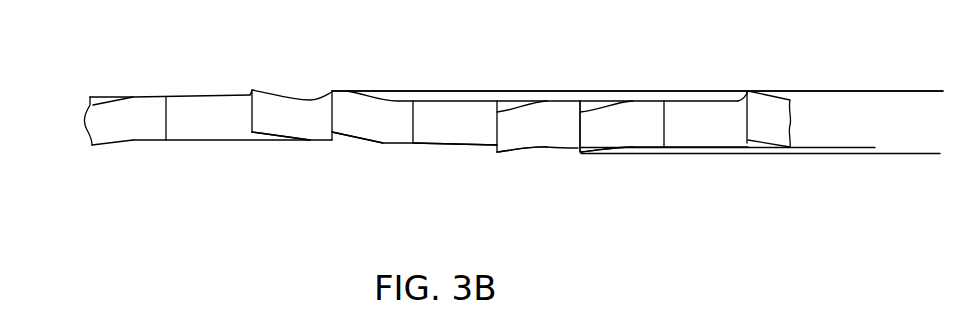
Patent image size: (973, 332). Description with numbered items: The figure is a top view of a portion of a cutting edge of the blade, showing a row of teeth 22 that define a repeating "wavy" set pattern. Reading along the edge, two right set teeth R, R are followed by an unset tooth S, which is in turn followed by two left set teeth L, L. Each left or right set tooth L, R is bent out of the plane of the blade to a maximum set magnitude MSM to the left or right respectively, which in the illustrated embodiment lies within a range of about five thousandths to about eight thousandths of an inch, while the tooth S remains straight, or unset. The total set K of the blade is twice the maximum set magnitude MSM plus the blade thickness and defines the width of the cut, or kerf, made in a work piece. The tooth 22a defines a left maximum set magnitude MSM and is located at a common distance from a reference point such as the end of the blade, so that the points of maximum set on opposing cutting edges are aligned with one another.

The teeth 22 is at (311, 84).
The tooth 22a is at (581, 152).
The right set tooth R is at (302, 131).
The unset tooth S is at (456, 131).
The left set tooth L is at (516, 133).
The total set K is at (911, 80).
The maximum set magnitude MSM is at (857, 113).